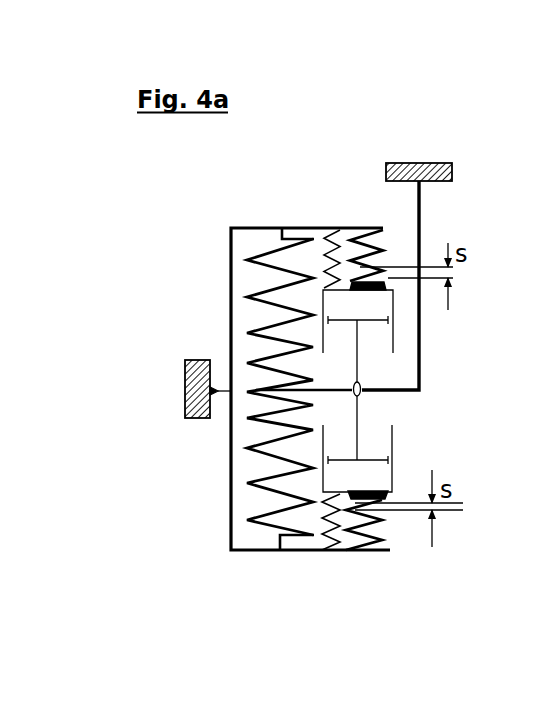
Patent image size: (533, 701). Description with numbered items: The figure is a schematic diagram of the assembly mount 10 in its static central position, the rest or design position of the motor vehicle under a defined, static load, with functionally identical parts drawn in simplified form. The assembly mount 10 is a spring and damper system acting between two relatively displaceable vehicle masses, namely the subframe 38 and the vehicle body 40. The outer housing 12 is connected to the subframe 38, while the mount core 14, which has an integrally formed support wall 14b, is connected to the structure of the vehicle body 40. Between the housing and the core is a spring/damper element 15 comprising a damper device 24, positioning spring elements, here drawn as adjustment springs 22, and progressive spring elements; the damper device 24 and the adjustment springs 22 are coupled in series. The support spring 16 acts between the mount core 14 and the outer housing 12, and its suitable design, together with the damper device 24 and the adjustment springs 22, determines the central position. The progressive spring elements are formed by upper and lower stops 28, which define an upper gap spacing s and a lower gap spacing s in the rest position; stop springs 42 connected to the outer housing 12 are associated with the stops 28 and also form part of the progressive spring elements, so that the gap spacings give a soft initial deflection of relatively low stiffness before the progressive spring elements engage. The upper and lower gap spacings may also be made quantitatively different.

The assembly mount 10 is at (430, 85).
The outer housing 12 is at (243, 553).
The mount core 14 is at (421, 359).
The support wall 14b is at (348, 392).
The spring/damper element 15 is at (412, 460).
The support spring 16 is at (260, 328).
The positioning spring element 22 is at (327, 283).
The damper device 24 is at (369, 350).
The stop 28 is at (384, 283).
The subframe 38 is at (185, 383).
The vehicle body 40 is at (425, 164).
The stop spring 42 is at (385, 245).